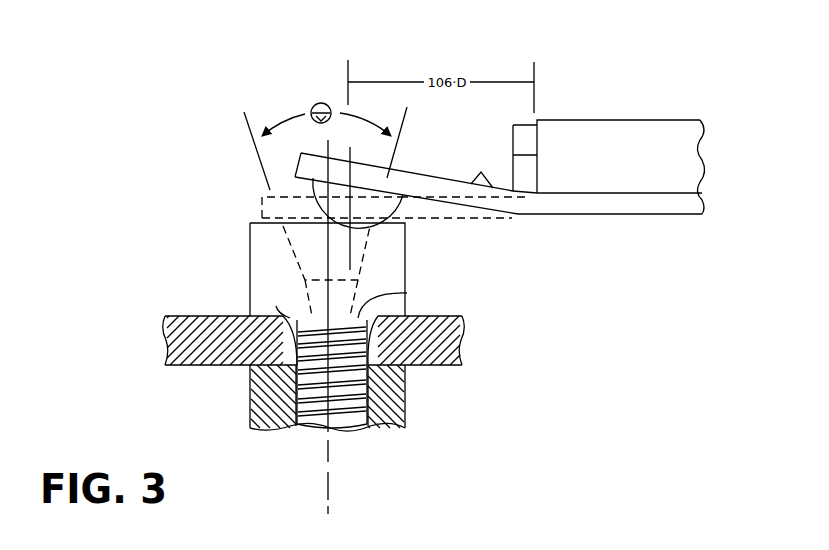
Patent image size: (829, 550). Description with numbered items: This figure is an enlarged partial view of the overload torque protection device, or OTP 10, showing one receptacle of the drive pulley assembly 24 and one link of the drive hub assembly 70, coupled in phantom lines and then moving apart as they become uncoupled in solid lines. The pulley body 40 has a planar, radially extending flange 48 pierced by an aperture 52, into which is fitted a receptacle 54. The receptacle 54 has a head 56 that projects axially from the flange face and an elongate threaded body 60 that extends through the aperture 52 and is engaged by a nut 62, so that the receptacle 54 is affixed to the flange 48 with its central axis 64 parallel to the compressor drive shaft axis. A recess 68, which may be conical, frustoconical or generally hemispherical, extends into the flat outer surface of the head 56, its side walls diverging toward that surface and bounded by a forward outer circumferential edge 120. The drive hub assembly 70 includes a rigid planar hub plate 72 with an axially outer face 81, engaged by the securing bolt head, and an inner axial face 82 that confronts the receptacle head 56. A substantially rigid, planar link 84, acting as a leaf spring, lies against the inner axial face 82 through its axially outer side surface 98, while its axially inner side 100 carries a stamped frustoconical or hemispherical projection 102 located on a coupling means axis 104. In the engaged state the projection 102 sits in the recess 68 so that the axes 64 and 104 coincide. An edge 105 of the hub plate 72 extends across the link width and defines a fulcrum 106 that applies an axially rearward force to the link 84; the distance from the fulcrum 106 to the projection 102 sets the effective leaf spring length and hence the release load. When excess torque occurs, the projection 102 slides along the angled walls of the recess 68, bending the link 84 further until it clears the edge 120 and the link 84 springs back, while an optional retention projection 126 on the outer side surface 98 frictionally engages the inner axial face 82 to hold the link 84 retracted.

The OTP 10 is at (178, 132).
The drive pulley assembly 24 is at (308, 309).
The pulley body 40 is at (346, 340).
The flange 48 is at (463, 351).
The aperture 52 is at (410, 294).
The receptacle 54 is at (412, 275).
The head 56 is at (332, 269).
The threaded body 60 is at (350, 417).
The nut 62 is at (405, 406).
The central axis 64 is at (328, 488).
The recess 68 is at (300, 258).
The drive hub assembly 70 is at (523, 147).
The hub plate 72 is at (703, 157).
The axially outer face 81 is at (644, 140).
The inner axial face 82 is at (522, 210).
The link 84 is at (703, 205).
The axially outer side surface 98 is at (667, 186).
The axially inner side 100 is at (363, 222).
The projection 102 is at (344, 219).
The coupling means axis 104 is at (352, 149).
The edge 105 is at (512, 154).
The fulcrum 106 is at (543, 190).
The outer circumferential edge 120 is at (250, 222).
The retention projection 126 is at (481, 172).